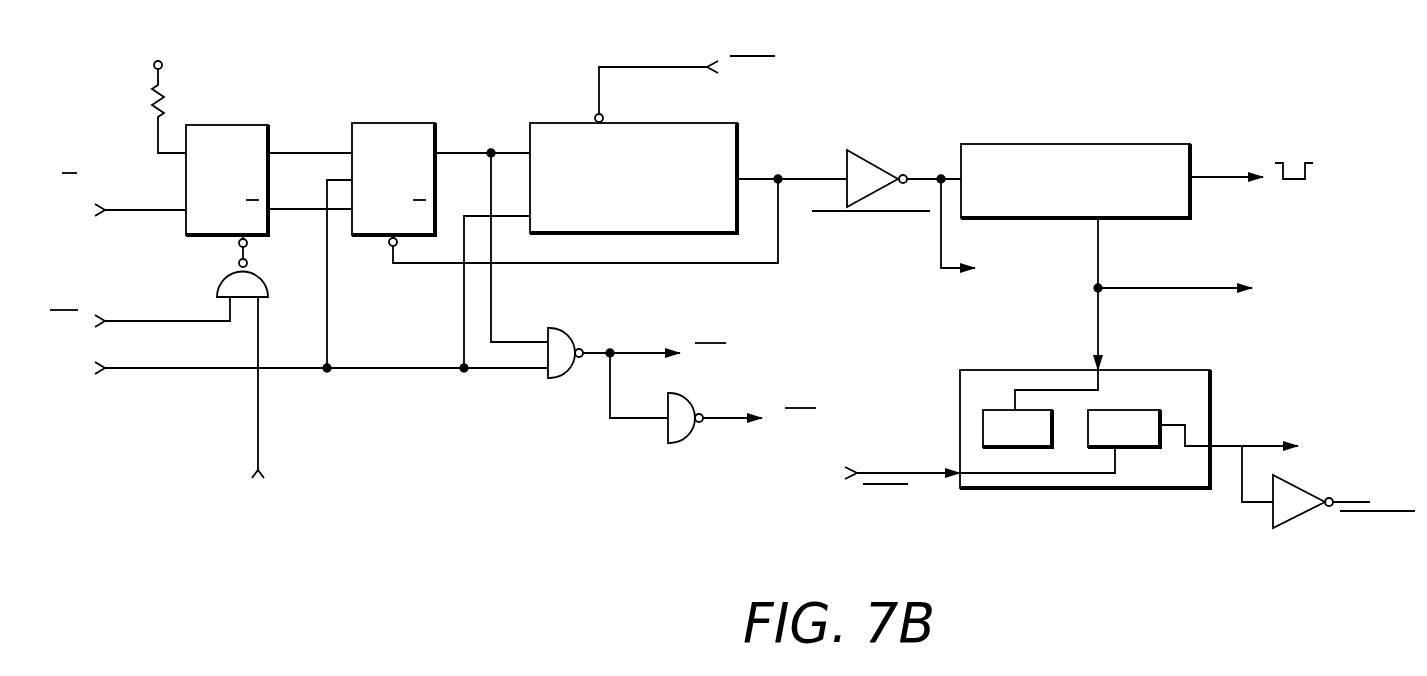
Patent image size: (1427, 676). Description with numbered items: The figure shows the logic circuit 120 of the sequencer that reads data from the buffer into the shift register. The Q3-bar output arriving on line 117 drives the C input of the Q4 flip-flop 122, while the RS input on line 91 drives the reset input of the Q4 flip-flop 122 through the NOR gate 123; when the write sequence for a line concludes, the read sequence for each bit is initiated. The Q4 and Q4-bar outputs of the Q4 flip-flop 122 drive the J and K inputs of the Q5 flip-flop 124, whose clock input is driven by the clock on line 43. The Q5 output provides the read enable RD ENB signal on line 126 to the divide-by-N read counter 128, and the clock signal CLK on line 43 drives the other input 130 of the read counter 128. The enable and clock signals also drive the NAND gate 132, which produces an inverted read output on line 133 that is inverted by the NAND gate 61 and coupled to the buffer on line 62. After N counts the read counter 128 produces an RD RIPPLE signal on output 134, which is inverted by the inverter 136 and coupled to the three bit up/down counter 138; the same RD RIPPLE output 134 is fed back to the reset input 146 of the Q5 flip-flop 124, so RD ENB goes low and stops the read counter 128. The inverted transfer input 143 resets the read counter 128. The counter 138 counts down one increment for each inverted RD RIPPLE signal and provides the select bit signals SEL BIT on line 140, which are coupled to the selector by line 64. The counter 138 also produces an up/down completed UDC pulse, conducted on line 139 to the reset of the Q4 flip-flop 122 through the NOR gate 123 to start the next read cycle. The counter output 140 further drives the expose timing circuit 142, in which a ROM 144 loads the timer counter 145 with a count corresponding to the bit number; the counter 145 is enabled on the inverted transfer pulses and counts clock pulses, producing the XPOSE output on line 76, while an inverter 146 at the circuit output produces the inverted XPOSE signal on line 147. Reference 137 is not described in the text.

The logic circuit 120 is at (1141, 22).
The Q4 flip-flop 122 is at (268, 125).
The Q5 flip-flop 124 is at (430, 123).
The line 117 is at (155, 212).
The NOR gate 123 is at (262, 272).
The line 91 is at (160, 320).
The clock line 43 is at (288, 370).
The line 139 is at (258, 432).
The line 126 is at (507, 158).
The input 130 is at (483, 213).
The reset input / inverter 146 is at (420, 265).
The inverted transfer input 143 is at (652, 67).
The divide-by-N read counter 128 is at (720, 123).
The output 134 is at (763, 178).
The inverter 136 is at (866, 155).
The RD RIPPLE line 137 is at (925, 178).
The three bit up/down counter 138 is at (1058, 144).
The line 140 is at (1098, 254).
The line 64 is at (1160, 290).
The line 133 is at (605, 350).
The NAND gate 132 is at (568, 380).
The NAND gate 61 is at (668, 430).
The line 62 is at (725, 422).
The expose timing circuit 142 is at (988, 370).
The ROM 144 is at (1030, 447).
The timer counter 145 is at (1135, 410).
The line 76 is at (1255, 446).
The line 147 is at (1352, 502).